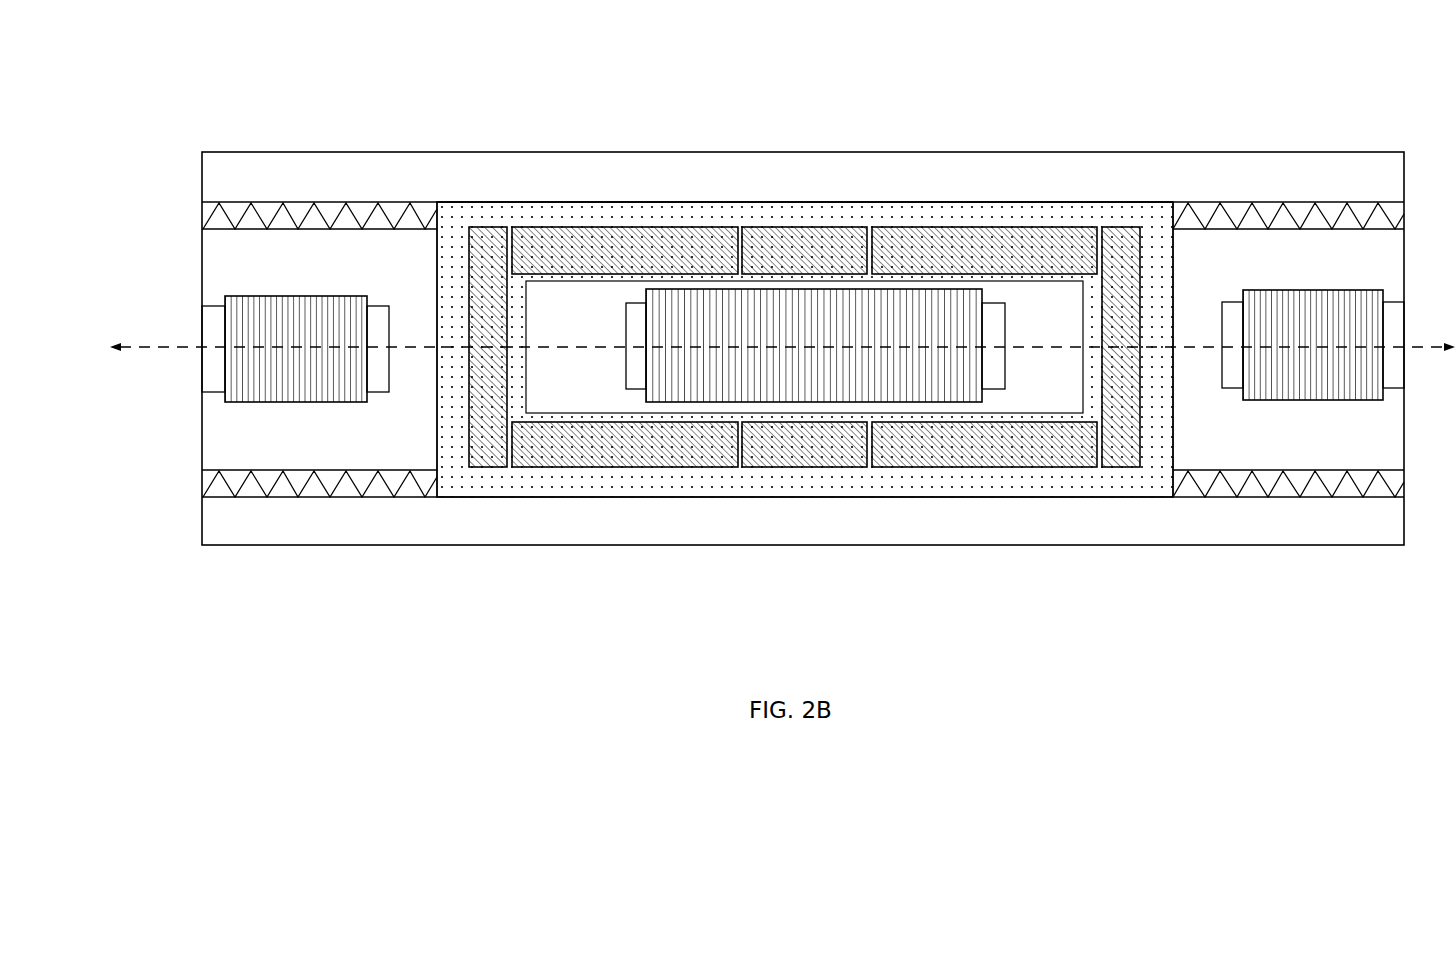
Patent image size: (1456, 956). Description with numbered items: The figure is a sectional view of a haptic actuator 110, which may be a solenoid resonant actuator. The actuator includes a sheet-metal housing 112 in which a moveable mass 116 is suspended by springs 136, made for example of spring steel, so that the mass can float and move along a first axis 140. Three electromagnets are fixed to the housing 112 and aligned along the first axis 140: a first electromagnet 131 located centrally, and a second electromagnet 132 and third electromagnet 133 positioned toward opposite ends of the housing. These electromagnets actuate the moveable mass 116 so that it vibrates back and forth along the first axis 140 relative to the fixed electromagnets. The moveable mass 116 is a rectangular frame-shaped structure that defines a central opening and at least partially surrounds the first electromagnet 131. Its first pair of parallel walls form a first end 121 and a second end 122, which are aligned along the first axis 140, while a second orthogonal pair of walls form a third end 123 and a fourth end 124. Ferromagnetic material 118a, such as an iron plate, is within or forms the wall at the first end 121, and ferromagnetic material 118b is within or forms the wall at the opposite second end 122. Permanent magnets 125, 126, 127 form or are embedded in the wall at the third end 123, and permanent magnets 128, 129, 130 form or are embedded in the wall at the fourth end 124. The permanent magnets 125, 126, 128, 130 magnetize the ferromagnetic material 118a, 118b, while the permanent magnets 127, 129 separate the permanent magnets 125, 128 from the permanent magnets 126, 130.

The haptic actuator 110 is at (192, 77).
The housing 112 is at (205, 151).
The moveable mass 116 is at (816, 347).
The ferromagnetic material 118a is at (490, 220).
The ferromagnetic material 118b is at (1122, 466).
The first end 121 is at (447, 376).
The second end 122 is at (1162, 330).
The third end 123 is at (552, 213).
The fourth end 124 is at (572, 480).
The permanent magnet 125 is at (683, 240).
The permanent magnet 126 is at (933, 240).
The permanent magnet 127 is at (833, 240).
The permanent magnet 128 is at (702, 468).
The permanent magnet 129 is at (817, 466).
The permanent magnet 130 is at (958, 466).
The first electromagnet 131 is at (1003, 315).
The second electromagnet 132 is at (313, 401).
The third electromagnet 133 is at (1313, 403).
The springs 136 is at (357, 197).
The first axis 140 is at (132, 343).